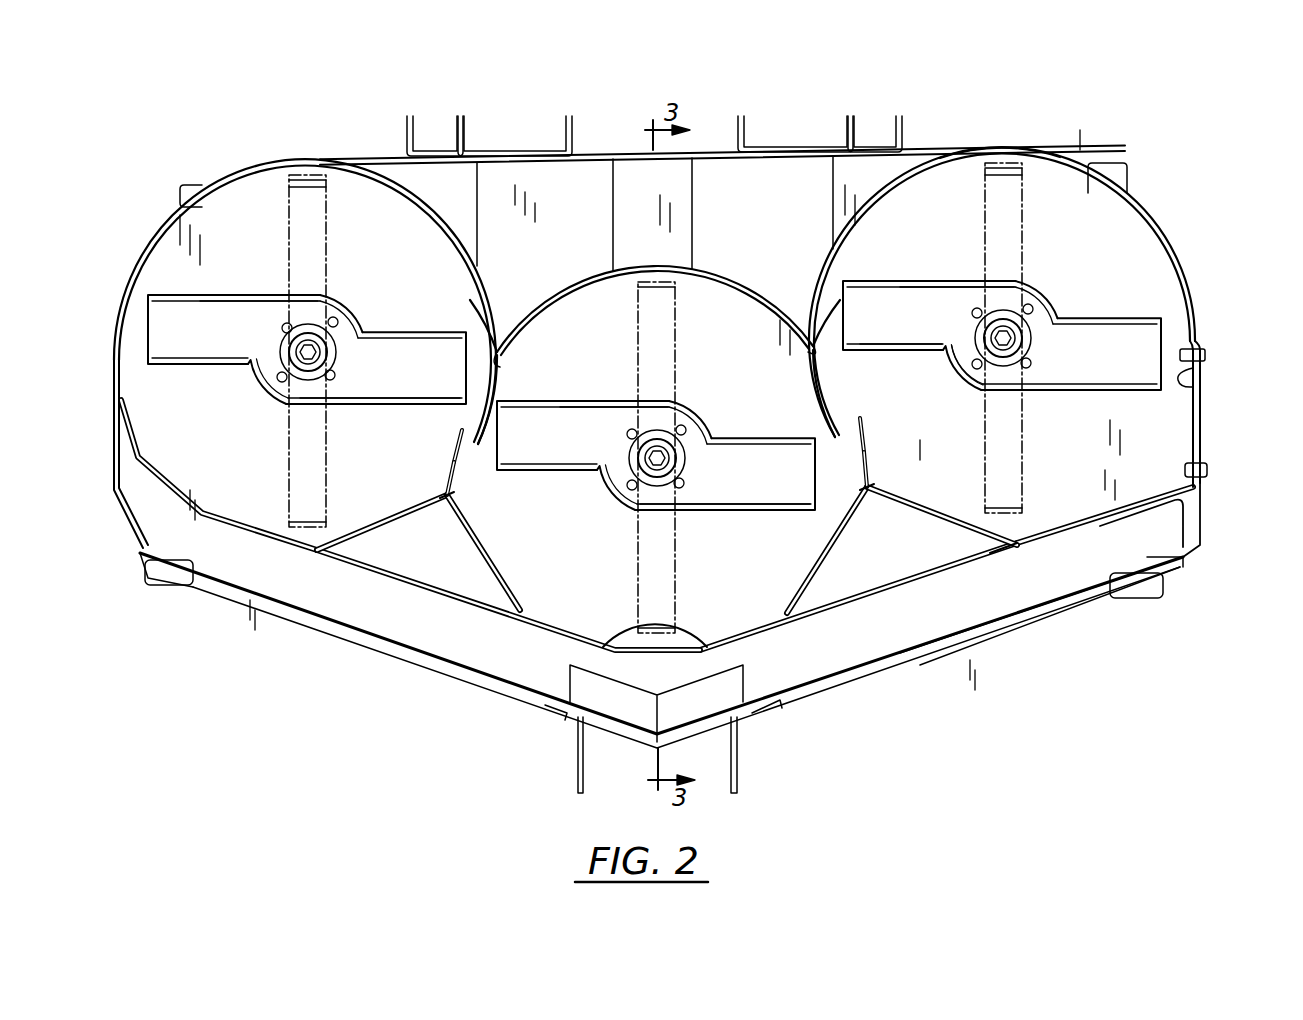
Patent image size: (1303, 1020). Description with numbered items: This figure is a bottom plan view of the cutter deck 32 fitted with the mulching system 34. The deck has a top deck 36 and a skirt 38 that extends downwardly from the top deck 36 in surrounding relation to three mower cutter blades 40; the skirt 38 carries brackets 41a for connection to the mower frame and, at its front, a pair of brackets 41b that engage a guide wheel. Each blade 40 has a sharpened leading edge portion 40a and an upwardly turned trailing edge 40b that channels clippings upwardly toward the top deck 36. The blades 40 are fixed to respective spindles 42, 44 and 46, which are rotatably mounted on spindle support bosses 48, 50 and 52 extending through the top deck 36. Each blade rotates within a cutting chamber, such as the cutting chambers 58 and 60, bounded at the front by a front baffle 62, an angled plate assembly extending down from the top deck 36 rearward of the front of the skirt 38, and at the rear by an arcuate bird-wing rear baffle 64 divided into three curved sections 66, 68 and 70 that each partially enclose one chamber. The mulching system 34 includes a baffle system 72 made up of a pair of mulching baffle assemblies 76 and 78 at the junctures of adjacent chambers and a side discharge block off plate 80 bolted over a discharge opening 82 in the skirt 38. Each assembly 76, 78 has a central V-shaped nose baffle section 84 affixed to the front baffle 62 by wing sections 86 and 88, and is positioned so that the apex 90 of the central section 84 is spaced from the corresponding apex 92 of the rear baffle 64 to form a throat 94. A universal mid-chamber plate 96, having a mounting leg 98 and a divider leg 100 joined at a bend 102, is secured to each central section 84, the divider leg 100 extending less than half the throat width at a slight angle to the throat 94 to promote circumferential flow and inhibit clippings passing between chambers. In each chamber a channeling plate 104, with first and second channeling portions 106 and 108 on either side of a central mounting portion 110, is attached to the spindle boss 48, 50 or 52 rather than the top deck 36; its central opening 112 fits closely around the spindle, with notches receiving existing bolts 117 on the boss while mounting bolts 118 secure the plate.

The cutter deck 32 is at (1222, 358).
The mulching system 34 is at (1180, 240).
The top deck 36 is at (1127, 230).
The skirt 38 is at (387, 643).
The mower cutter blade 40 is at (327, 240).
The sharpened leading edge portion 40a is at (330, 172).
The upwardly turned trailing edge 40b is at (278, 178).
The brackets 41a is at (422, 116).
The brackets 41b is at (577, 783).
The spindle 42 is at (290, 366).
The spindle 44 is at (680, 467).
The spindle 46 is at (1020, 340).
The spindle support boss 48 is at (278, 340).
The spindle support boss 50 is at (243, 190).
The spindle support boss 52 is at (960, 375).
The cutting chamber 58 is at (695, 288).
The cutting chamber 60 is at (1050, 185).
The front baffle 62 is at (957, 570).
The rear baffle 64 is at (922, 183).
The curved section 66 is at (447, 223).
The curved section 68 is at (583, 280).
The curved section 70 is at (997, 148).
The baffle system 72 is at (450, 590).
The mulching baffle assembly 76 is at (493, 552).
The mulching baffle assembly 78 is at (958, 513).
The side discharge block off plate 80 is at (1193, 387).
The discharge opening 82 is at (1203, 427).
The central V-shaped nose baffle section 84 is at (1000, 540).
The wing section 86 is at (237, 517).
The wing section 88 is at (590, 590).
The apex 90 is at (452, 495).
The apex 92 is at (500, 367).
The throat 94 is at (493, 322).
The mid-chamber plate 96 is at (480, 417).
The mounting leg 98 is at (387, 520).
The divider leg 100 is at (462, 430).
The bend 102 is at (447, 492).
The channeling plate 104 is at (255, 397).
The first channeling portion 106 is at (170, 335).
The second channeling portion 108 is at (420, 360).
The central mounting portion 110 is at (275, 338).
The central opening 112 is at (356, 398).
The existing bolts 117 is at (282, 377).
The mounting bolts 118 is at (330, 322).